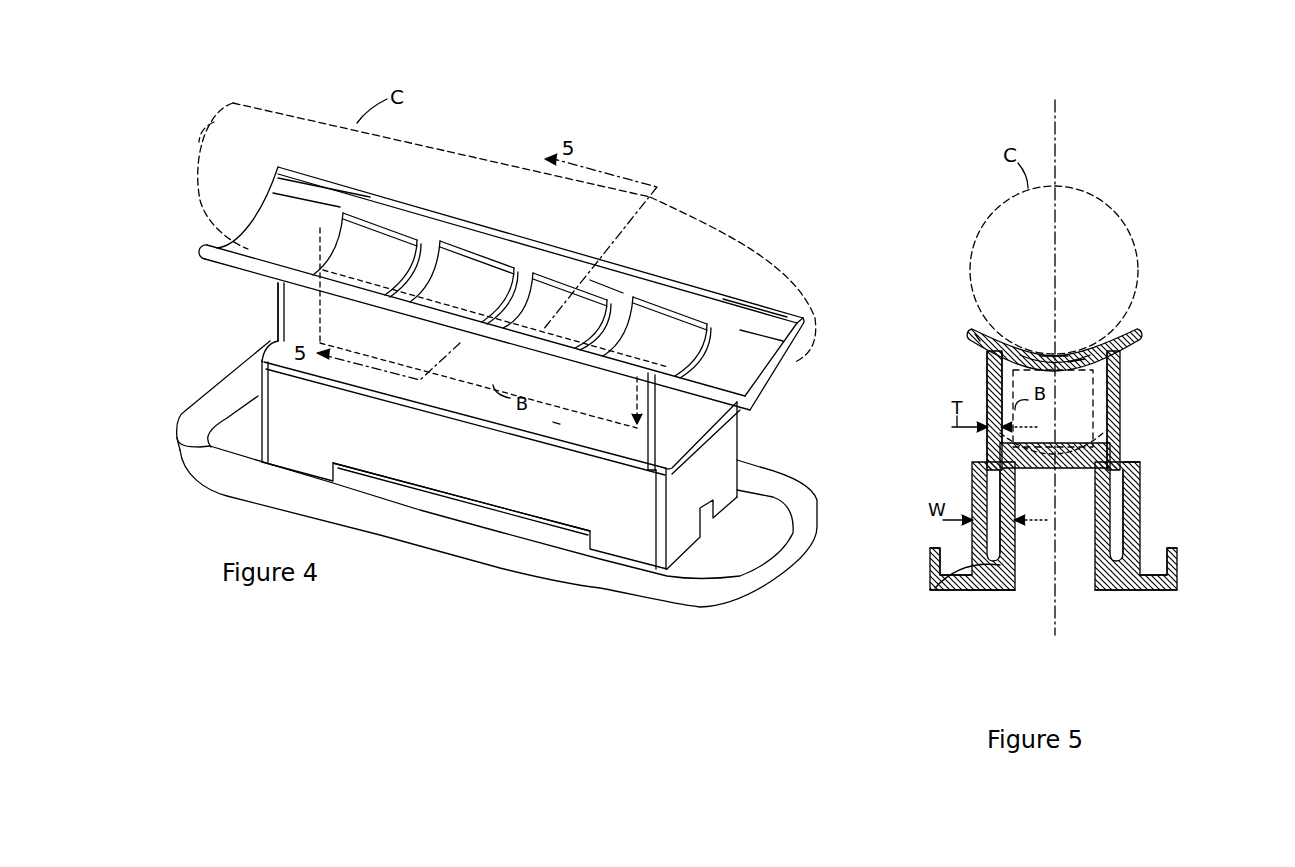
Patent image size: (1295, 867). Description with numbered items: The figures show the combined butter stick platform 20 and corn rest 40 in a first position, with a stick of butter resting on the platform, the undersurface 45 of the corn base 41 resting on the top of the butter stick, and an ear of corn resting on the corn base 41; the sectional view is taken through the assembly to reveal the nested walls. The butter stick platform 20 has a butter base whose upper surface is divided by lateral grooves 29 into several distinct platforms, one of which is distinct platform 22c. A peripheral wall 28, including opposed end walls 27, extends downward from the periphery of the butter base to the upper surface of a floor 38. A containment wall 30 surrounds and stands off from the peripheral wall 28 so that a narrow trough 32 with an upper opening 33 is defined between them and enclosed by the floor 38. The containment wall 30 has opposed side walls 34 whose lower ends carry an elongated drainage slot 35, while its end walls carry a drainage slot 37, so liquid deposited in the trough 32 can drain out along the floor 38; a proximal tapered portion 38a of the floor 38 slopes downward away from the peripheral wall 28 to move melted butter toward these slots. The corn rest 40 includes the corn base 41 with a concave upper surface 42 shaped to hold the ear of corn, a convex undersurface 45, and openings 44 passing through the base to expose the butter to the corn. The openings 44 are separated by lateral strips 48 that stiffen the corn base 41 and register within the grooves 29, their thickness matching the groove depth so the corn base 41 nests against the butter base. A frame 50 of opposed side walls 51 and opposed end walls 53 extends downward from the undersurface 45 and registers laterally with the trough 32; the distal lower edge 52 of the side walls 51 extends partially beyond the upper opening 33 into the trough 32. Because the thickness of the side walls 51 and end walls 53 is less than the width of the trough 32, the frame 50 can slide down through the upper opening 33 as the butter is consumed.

In FIG. 4, the butter stick platform 20 is at (820, 456).
In FIG. 5, the butter stick platform 20 is at (1113, 618).
In FIG. 5, the distinct platform 22c is at (1123, 440).
In FIG. 4, the end walls 27 is at (684, 540).
In FIG. 5, the peripheral wall 28 is at (1000, 487).
In FIG. 5, the grooves 29 is at (983, 442).
In FIG. 4, the containment wall 30 is at (300, 422).
In FIG. 5, the containment wall 30 is at (972, 530).
In FIG. 5, the trough 32 is at (1140, 508).
In FIG. 4, the upper opening 33 is at (690, 420).
In FIG. 5, the upper opening 33 is at (1130, 458).
In FIG. 4, the side walls 34 is at (507, 480).
In FIG. 4, the elongated drainage slot 35 is at (372, 478).
In FIG. 5, the elongated drainage slot 35 is at (1142, 568).
In FIG. 4, the drainage slot 37 is at (710, 531).
In FIG. 4, the floor 38 is at (707, 565).
In FIG. 5, the proximal tapered portion 38a is at (932, 591).
In FIG. 4, the corn rest 40 is at (178, 228).
In FIG. 5, the corn rest 40 is at (1177, 328).
In FIG. 4, the corn base 41 is at (800, 317).
In FIG. 5, the corn base 41 is at (993, 334).
In FIG. 4, the concave upper surface 42 is at (733, 330).
In FIG. 5, the concave upper surface 42 is at (1040, 352).
In FIG. 4, the openings 44 is at (381, 255).
In FIG. 5, the openings 44 is at (1070, 360).
In FIG. 5, the undersurface 45 is at (990, 383).
In FIG. 4, the lateral strips 48 is at (512, 284).
In FIG. 5, the lateral strips 48 is at (1007, 352).
In FIG. 4, the frame 50 is at (182, 277).
In FIG. 4, the side walls 51 is at (297, 312).
In FIG. 5, the side walls 51 is at (1120, 395).
In FIG. 4, the distal lower edge 52 is at (553, 422).
In FIG. 5, the distal lower edge 52 is at (1108, 447).
In FIG. 4, the end walls 53 is at (657, 467).